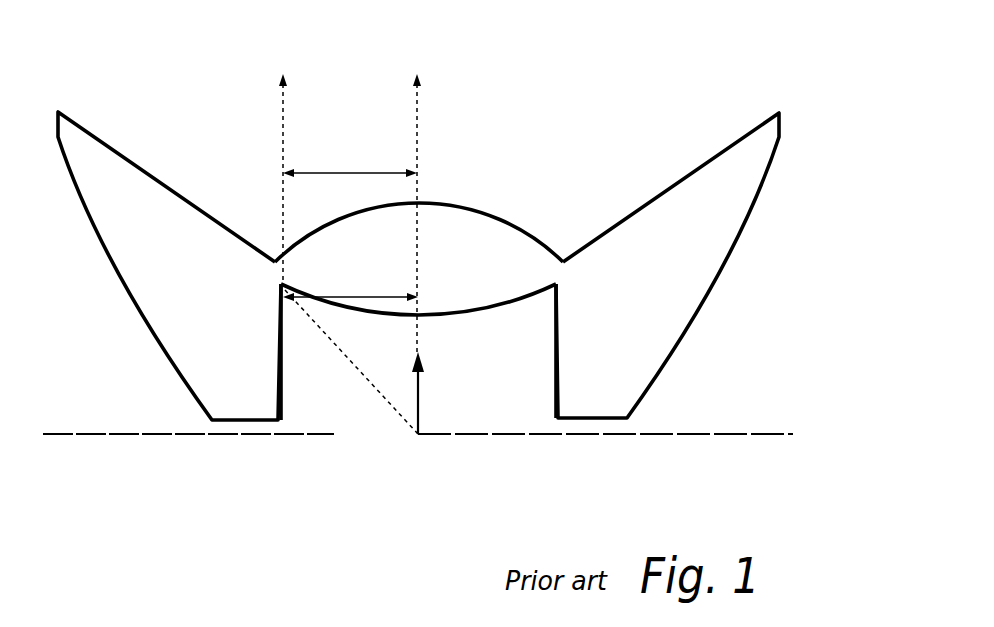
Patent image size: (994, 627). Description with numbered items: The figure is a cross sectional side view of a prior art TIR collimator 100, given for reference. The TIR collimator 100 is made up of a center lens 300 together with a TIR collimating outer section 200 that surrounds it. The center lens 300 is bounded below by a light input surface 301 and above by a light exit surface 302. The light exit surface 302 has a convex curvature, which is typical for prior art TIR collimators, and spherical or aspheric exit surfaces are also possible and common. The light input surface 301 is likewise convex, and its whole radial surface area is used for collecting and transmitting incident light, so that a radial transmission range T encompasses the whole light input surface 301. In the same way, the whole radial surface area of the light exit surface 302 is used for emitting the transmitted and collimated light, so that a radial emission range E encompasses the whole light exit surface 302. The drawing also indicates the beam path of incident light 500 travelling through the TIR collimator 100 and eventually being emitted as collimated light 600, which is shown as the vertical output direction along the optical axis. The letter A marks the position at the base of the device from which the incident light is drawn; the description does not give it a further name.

The TIR collimator 100 is at (632, 60).
The TIR collimating outer section 200 is at (663, 307).
The center lens 300 is at (476, 243).
The light input surface 301 is at (485, 312).
The light exit surface 302 is at (535, 237).
The incident light 500 is at (388, 382).
The collimated light 600 is at (405, 106).
The radial emission range E is at (337, 172).
The radial transmission range T is at (385, 296).
The light source position A is at (418, 403).